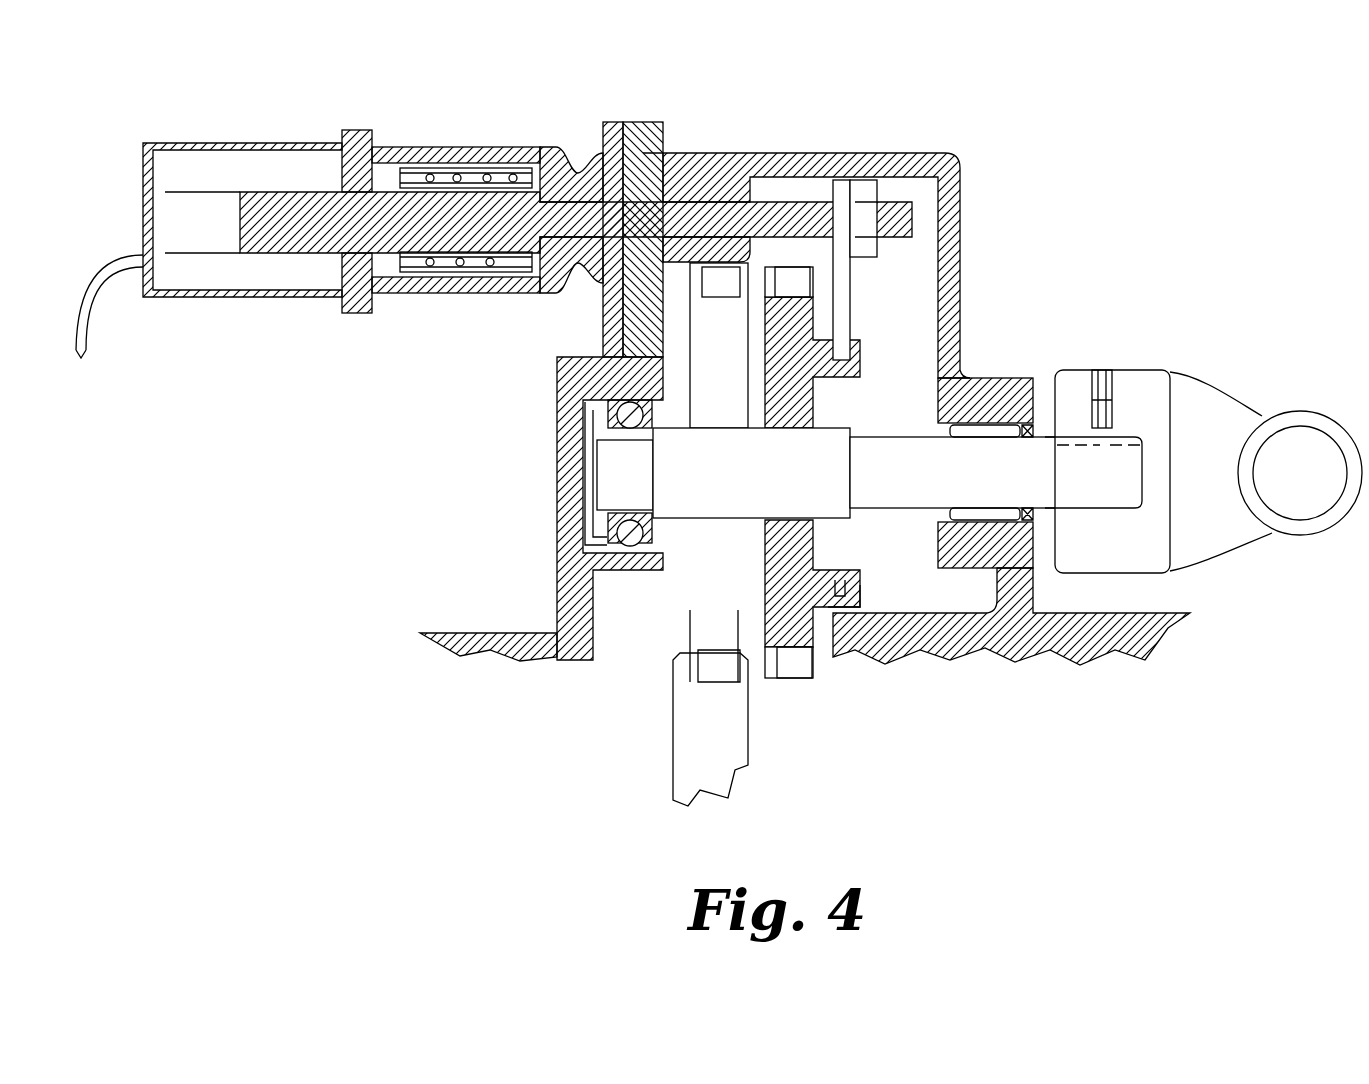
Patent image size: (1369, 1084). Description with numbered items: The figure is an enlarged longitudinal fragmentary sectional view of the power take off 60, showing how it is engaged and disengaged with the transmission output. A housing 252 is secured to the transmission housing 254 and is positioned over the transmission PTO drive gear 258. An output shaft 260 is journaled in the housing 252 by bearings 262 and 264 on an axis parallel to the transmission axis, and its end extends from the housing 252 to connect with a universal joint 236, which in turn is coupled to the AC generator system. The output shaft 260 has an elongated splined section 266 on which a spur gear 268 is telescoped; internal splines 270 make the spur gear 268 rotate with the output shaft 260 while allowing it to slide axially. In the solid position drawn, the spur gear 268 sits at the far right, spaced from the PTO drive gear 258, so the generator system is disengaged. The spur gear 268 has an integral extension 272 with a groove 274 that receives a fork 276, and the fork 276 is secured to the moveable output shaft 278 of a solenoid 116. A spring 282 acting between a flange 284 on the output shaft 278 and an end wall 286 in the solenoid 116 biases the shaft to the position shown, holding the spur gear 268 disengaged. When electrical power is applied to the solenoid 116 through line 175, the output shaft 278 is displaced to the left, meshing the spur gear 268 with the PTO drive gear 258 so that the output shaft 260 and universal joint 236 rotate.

The power take off 60 is at (978, 249).
The solenoid 116 is at (196, 143).
The line 175 is at (80, 290).
The universal joint 236 is at (1288, 379).
The housing 252 is at (962, 292).
The transmission housing 254 is at (1180, 640).
The transmission PTO drive gear 258 is at (750, 750).
The output shaft 260 is at (1035, 460).
The bearing 262 is at (565, 523).
The bearing 264 is at (1003, 566).
The elongated splined section 266 is at (713, 428).
The spur gear 268 is at (798, 366).
The internal splines 270 is at (758, 522).
The integral extension 272 is at (820, 608).
The groove 274 is at (840, 606).
The fork 276 is at (855, 332).
The output shaft of solenoid 278 is at (773, 212).
The spring 282 is at (437, 176).
The flange 284 is at (497, 270).
The end wall 286 is at (335, 286).